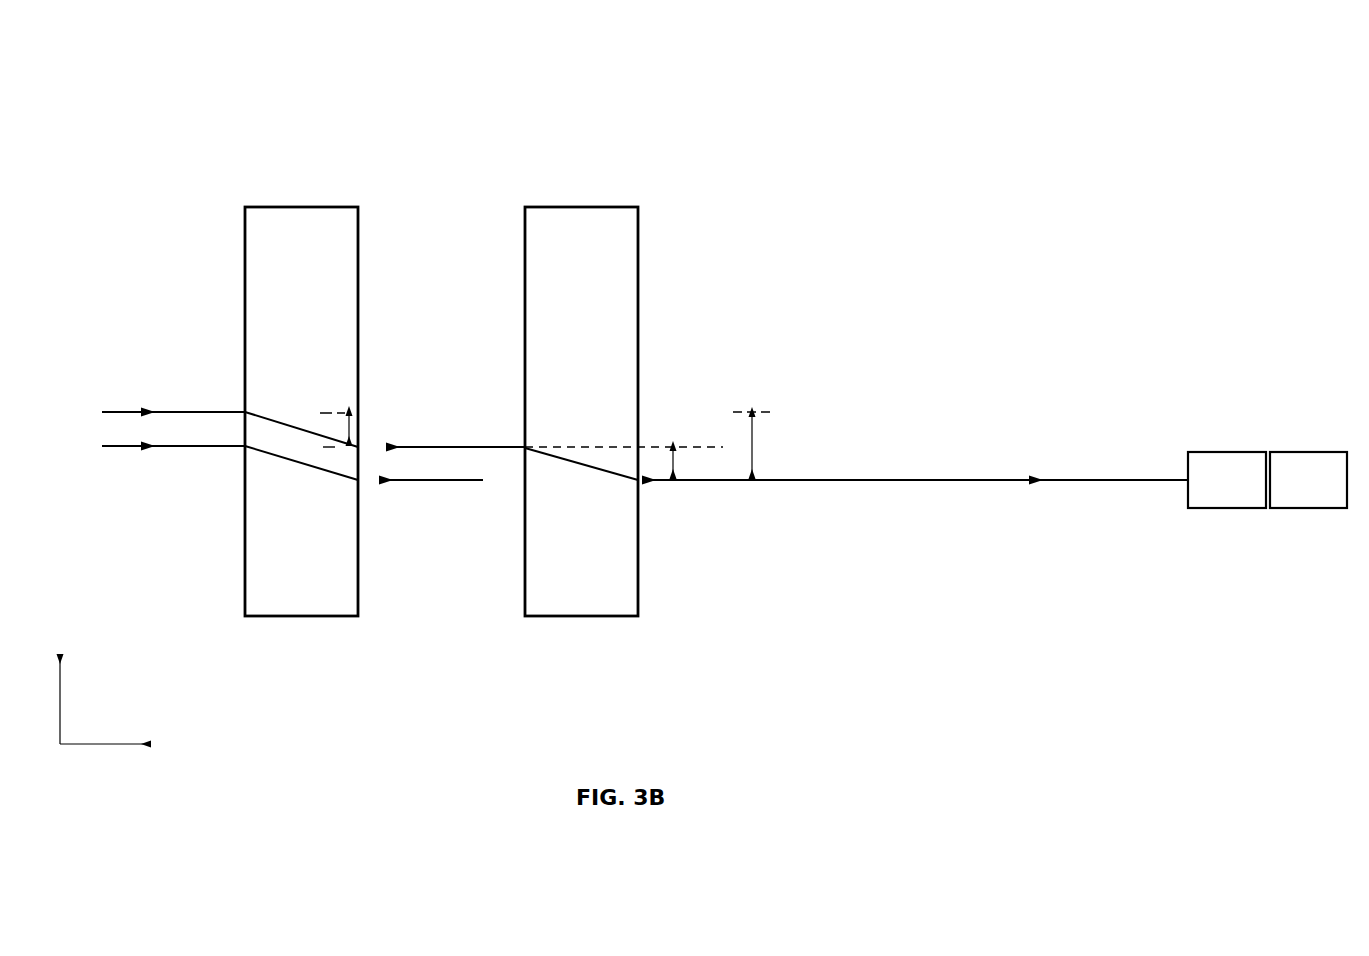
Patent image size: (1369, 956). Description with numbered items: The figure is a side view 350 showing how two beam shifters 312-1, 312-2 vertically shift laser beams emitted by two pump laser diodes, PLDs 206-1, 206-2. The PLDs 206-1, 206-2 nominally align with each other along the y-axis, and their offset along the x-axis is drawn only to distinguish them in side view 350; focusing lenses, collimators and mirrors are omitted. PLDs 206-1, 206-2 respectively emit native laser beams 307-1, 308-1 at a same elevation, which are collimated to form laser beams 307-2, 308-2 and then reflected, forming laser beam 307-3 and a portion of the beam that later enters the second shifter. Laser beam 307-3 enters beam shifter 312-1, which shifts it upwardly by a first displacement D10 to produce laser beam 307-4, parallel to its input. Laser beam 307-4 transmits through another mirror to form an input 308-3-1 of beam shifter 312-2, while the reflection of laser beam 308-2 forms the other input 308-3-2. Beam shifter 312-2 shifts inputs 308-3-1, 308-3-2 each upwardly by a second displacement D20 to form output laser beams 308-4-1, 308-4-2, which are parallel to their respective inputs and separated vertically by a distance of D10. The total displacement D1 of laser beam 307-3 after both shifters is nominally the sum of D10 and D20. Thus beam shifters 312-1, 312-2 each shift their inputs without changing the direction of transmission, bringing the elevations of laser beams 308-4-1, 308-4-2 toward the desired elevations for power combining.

The side view 350 is at (674, 83).
The beam shifter 312-1 is at (618, 318).
The beam shifter 312-2 is at (331, 318).
The PLD 206-1 is at (1257, 493).
The PLD 206-2 is at (1335, 493).
The native laser beam 307-1 is at (1082, 480).
The laser beam 307-2 is at (946, 480).
The laser beam 307-3 is at (820, 480).
The laser beam 307-4 is at (493, 447).
The native laser beam 308-1 is at (1109, 436).
The laser beam 308-2 is at (838, 436).
The input 308-3-1 is at (382, 446).
The input 308-3-2 is at (438, 493).
The laser beam 308-4-1 is at (195, 400).
The laser beam 308-4-2 is at (195, 461).
The total displacement D1 is at (755, 445).
The first displacement D10 is at (698, 464).
The second displacement D20 is at (328, 430).